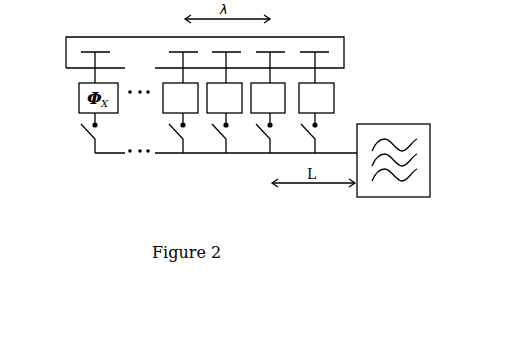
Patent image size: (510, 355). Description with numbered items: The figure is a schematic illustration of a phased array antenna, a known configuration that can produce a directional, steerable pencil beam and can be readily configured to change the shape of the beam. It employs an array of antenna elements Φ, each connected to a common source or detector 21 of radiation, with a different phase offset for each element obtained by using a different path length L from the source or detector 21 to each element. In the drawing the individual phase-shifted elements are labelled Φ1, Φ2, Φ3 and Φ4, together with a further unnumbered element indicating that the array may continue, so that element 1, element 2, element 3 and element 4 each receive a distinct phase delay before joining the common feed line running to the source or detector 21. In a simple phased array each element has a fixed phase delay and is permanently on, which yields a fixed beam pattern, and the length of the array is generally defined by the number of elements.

The source or detector 21 is at (417, 123).
The phase shifter Φ 1 is at (316, 98).
The phase shifter Φ 2 is at (268, 98).
The phase shifter Φ 3 is at (224, 98).
The phase shifter Φ 4 is at (180, 98).